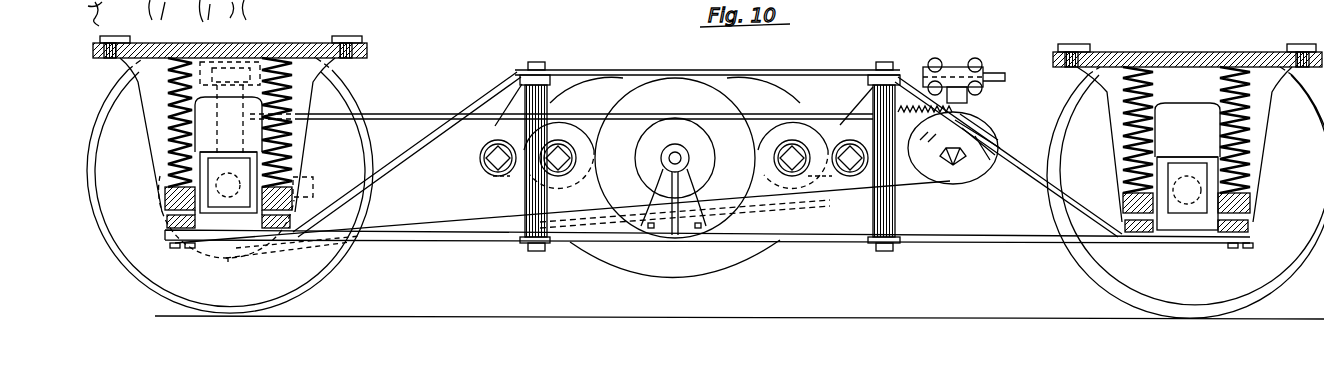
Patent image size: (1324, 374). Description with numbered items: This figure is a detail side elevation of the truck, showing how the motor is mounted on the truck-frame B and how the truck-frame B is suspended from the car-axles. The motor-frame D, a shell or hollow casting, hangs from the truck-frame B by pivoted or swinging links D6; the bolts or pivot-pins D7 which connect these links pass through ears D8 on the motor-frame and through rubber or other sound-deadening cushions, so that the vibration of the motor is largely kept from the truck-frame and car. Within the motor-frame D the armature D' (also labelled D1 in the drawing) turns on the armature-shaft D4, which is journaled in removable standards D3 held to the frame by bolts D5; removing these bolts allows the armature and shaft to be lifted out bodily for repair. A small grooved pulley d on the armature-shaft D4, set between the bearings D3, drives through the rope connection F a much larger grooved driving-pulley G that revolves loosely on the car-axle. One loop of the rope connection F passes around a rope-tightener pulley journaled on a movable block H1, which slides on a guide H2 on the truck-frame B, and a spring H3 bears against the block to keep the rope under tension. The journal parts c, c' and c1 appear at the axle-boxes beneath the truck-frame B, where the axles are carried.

The truck-frame B is at (799, 68).
The rope connection F is at (397, 116).
The motor-frame D is at (675, 177).
The grooved pulley d is at (675, 158).
The armature D' is at (676, 155).
The side bearing D1 is at (676, 155).
The removable standards D3 is at (683, 178).
The armature-shaft D4 is at (679, 152).
The bolts D5 is at (653, 230).
The pivoted links D6 is at (497, 127).
The bolts or pivot-pins D7 is at (490, 160).
The ears D8 is at (493, 182).
The movable bracket or block H1 is at (972, 101).
The guide H2 is at (1002, 74).
The spring H3 is at (925, 92).
The journal c is at (690, 227).
The journal box c' is at (710, 208).
The journal box c1 is at (166, 233).
The driving-pulley G is at (232, 252).